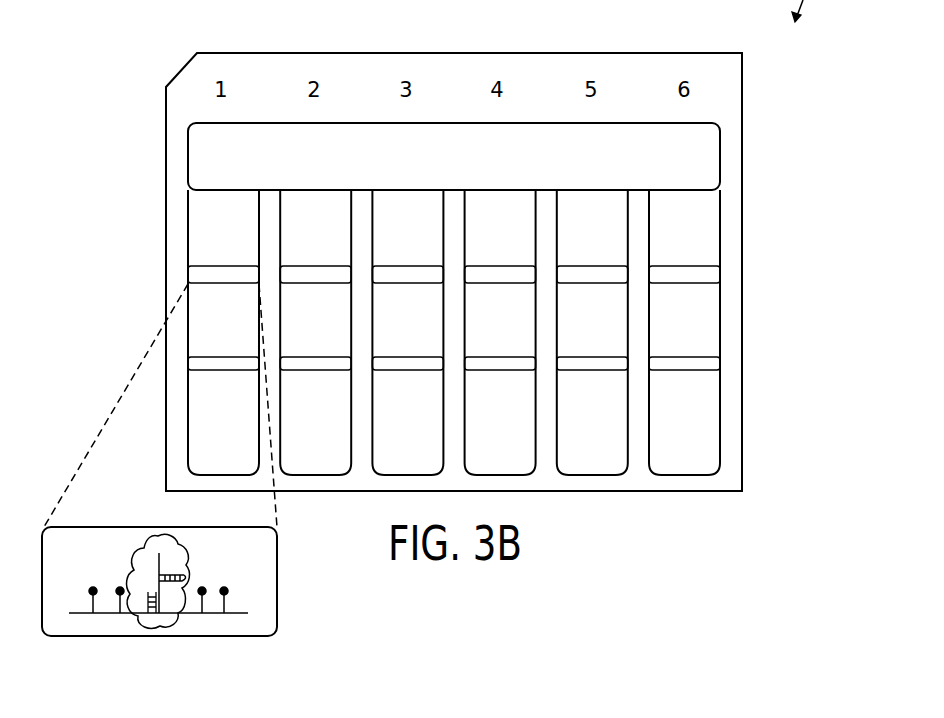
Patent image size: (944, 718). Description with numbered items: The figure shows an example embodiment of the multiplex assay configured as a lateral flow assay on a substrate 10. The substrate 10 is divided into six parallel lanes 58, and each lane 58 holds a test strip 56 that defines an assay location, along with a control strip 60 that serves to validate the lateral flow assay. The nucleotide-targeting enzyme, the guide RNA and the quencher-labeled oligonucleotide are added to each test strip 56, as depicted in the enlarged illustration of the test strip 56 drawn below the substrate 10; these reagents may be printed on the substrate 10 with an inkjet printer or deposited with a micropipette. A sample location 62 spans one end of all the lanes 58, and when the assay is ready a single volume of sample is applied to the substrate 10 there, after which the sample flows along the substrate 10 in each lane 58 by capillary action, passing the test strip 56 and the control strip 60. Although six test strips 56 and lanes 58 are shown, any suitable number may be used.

The substrate 10 is at (228, 53).
The test strip 56 is at (188, 272).
The lane 58 is at (214, 198).
The control strip 60 is at (188, 363).
The sample location 62 is at (467, 168).